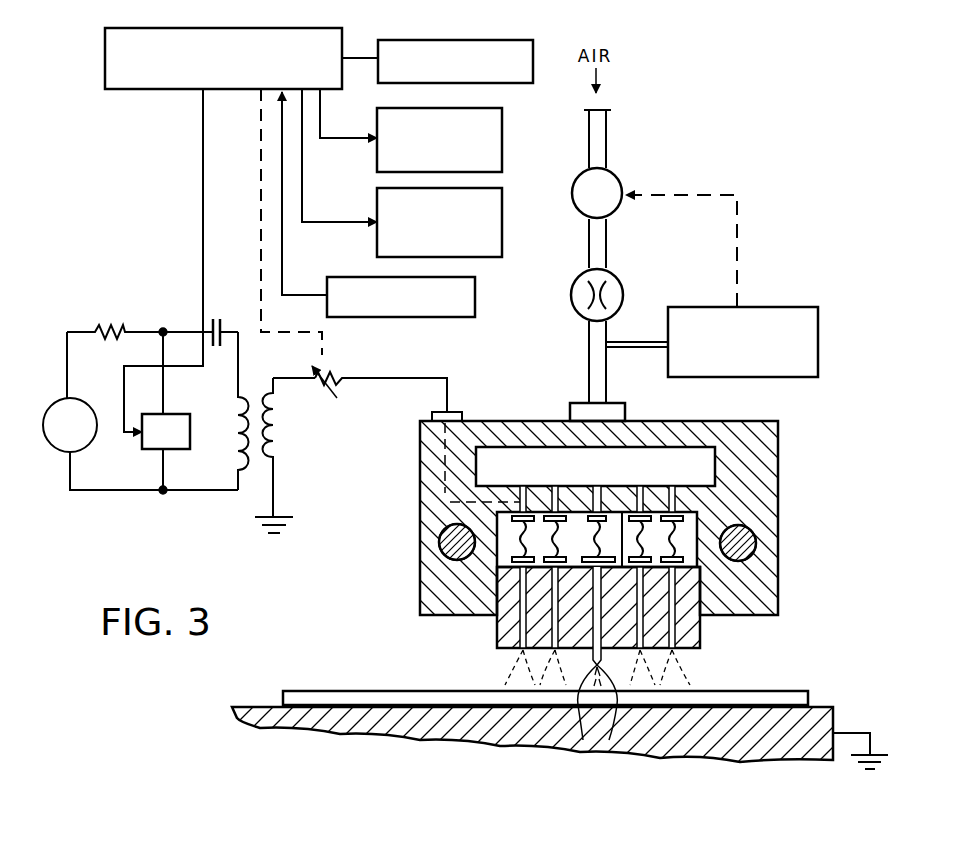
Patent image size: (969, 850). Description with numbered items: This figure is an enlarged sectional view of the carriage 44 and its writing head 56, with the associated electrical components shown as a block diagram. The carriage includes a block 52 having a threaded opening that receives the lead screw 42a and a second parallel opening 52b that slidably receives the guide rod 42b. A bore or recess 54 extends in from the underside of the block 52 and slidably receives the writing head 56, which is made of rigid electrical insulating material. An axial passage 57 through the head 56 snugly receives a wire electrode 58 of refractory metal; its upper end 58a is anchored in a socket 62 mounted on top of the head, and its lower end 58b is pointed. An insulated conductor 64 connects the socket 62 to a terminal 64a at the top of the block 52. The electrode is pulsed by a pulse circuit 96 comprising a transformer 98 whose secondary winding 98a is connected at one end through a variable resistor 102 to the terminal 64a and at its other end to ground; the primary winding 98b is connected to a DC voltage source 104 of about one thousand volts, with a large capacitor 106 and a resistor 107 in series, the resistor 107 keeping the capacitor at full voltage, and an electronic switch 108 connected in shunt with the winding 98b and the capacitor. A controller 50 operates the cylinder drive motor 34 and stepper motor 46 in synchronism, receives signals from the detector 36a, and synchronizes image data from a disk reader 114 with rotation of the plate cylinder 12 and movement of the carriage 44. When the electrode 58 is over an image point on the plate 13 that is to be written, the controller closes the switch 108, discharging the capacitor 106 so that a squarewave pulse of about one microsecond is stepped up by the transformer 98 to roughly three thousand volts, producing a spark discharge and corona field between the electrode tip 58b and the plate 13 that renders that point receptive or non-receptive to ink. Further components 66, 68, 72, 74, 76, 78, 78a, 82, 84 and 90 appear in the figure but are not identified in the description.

The plate cylinder 12 is at (250, 706).
The plate 13 is at (338, 695).
The cylinder drive motor 34 is at (502, 232).
The detector 36a is at (475, 297).
The lead screw 42a is at (440, 546).
The guide rod 42b is at (757, 540).
The carriage 44 is at (395, 513).
The stepper motor 46 is at (502, 145).
The controller 50 is at (143, 92).
The block 52 is at (782, 426).
The second parallel opening 52b is at (748, 549).
The bore or recess 54 is at (700, 601).
The writing head 56 is at (500, 649).
The axial passage 57 is at (690, 651).
The wire electrode 58 is at (600, 623).
The upper end of wire electrode 58a is at (622, 506).
The lower end of electrode 58b is at (570, 712).
The socket 62 is at (597, 539).
The insulated conductor 64 is at (590, 506).
The terminal 64a is at (452, 410).
The air nozzle 66 is at (595, 619).
The piezoelectric actuator block 68 is at (770, 516).
The air channel 72 is at (668, 506).
The ink reservoir chamber 74 is at (692, 448).
The air inlet fitting 76 is at (576, 418).
The pressure line 78 is at (589, 344).
The pressure branch line 78a is at (630, 349).
The air valve 82 is at (618, 178).
The flow regulator 84 is at (620, 277).
The pressure sensor 90 is at (786, 306).
The pulse circuit 96 is at (90, 318).
The transformer 98 is at (236, 448).
The secondary winding 98a is at (275, 452).
The primary winding 98b is at (240, 402).
The variable resistor 102 is at (343, 378).
The DC voltage source 104 is at (78, 446).
The capacitor 106 is at (220, 318).
The resistor 107 is at (119, 330).
The electronic switch 108 is at (160, 450).
The disk reader 114 is at (437, 40).